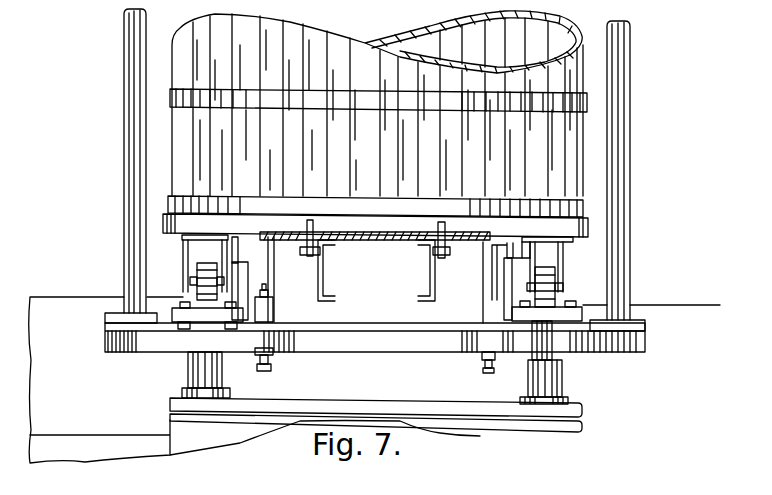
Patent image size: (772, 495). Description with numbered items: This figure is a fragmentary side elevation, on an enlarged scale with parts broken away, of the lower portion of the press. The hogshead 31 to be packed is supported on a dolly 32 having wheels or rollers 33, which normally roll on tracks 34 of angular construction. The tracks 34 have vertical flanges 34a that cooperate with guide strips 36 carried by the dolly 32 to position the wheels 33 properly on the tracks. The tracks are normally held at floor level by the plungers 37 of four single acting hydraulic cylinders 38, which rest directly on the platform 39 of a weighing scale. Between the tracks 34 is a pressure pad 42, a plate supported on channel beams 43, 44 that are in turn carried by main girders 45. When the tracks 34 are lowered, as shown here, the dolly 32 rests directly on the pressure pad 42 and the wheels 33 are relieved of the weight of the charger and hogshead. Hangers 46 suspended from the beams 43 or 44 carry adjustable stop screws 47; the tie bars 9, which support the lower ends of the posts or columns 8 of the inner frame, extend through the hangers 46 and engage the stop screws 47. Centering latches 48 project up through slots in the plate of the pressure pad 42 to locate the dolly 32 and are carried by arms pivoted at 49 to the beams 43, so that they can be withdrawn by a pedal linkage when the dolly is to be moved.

The posts or columns 8 is at (124, 170).
The tie bars 9 is at (382, 343).
The hogshead 31 is at (312, 38).
The dolly 32 is at (176, 228).
The wheels or rollers 33 is at (197, 292).
The tracks 34 is at (216, 312).
The vertical flanges 34a is at (249, 262).
The guide strips 36 is at (234, 241).
The plungers 37 is at (535, 348).
The single acting hydraulic cylinders 38 is at (562, 380).
The platform 39 is at (438, 394).
The pressure pad 42 is at (377, 240).
The channel beam 43 is at (324, 278).
The channel beam 44 is at (274, 278).
The main girders 45 is at (87, 308).
The hangers 46 is at (273, 313).
The adjustable stop screws 47 is at (270, 370).
The centering latches 48 is at (313, 228).
The pivot 49 is at (300, 252).